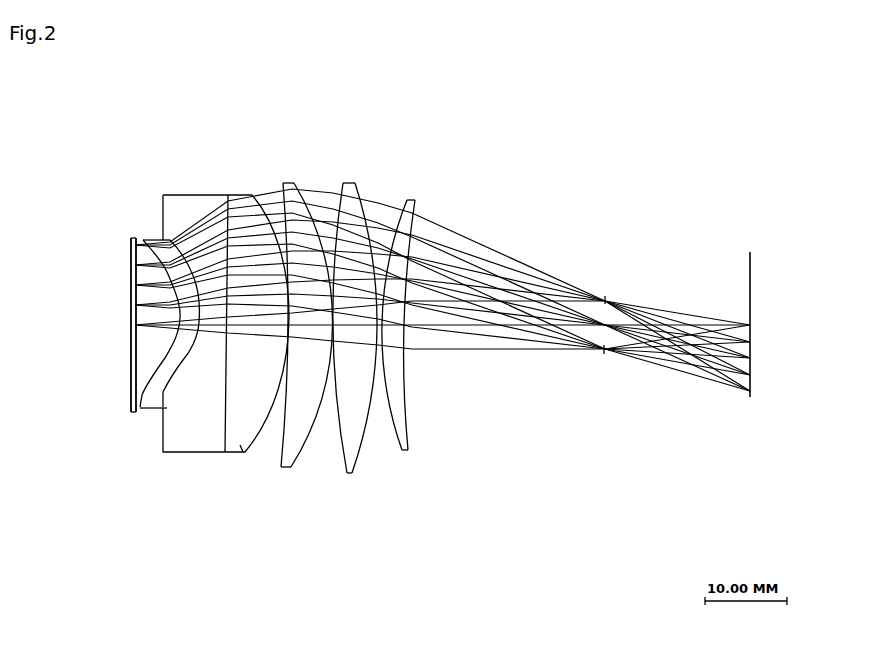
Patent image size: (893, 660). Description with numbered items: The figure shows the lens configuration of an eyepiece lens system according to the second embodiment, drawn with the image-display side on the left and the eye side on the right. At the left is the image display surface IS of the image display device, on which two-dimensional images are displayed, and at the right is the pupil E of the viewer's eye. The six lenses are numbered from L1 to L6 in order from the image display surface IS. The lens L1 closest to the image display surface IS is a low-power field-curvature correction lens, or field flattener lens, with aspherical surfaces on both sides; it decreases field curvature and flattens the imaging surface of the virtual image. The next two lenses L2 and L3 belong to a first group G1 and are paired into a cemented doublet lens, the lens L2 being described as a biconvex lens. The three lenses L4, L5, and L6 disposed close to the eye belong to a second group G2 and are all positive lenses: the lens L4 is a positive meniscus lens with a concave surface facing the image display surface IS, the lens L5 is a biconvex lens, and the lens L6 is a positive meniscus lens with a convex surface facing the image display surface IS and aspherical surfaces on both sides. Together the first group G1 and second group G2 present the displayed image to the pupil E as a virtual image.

The image display surface IS is at (132, 370).
The pupil of an eye E is at (607, 300).
The first group G1 is at (208, 355).
The second group G2 is at (368, 269).
The field-curvature correction lens L1 is at (158, 238).
The biconvex lens L2 is at (200, 444).
The lens of the cemented doublet L3 is at (258, 474).
The positive meniscus lens L4 is at (288, 186).
The biconvex lens L5 is at (350, 187).
The positive meniscus lens L6 is at (413, 288).